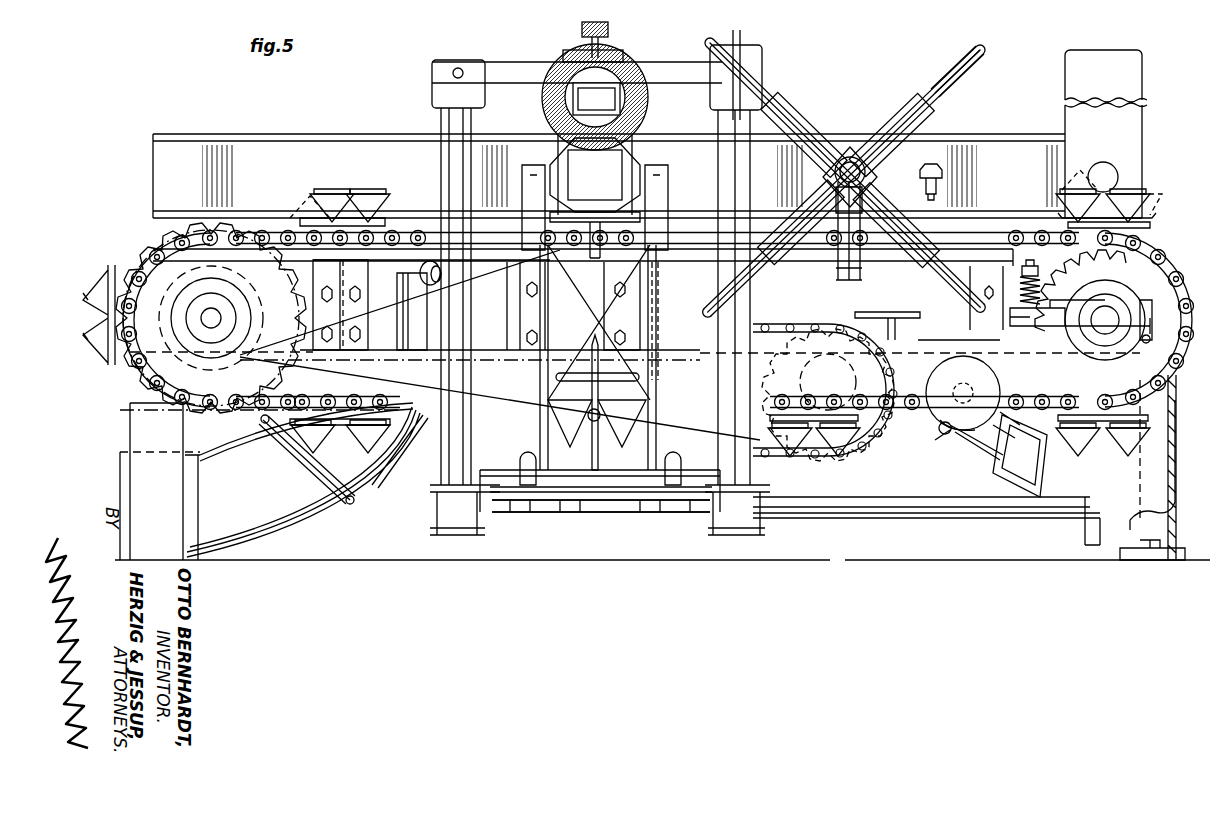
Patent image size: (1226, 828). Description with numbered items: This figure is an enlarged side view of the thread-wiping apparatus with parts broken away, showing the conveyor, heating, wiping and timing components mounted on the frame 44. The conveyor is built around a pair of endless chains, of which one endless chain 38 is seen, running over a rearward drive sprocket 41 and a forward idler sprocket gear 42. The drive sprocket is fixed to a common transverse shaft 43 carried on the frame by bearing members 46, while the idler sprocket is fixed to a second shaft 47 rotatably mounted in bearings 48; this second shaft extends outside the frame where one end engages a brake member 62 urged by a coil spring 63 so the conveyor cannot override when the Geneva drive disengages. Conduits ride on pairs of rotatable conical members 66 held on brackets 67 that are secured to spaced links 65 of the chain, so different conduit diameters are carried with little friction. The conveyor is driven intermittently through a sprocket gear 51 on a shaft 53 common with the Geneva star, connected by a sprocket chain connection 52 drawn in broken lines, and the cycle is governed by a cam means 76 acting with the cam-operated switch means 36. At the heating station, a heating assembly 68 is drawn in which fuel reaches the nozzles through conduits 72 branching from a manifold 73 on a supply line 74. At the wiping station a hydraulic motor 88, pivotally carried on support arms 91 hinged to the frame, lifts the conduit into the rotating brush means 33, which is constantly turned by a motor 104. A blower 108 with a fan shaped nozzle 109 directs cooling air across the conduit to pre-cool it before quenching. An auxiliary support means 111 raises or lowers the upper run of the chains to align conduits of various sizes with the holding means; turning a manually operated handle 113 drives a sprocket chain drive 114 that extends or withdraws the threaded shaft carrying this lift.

The rotating brush means 33 is at (625, 41).
The motor 104 is at (605, 98).
The hydraulic motor 88 is at (602, 190).
The scissor linkage 68 is at (859, 95).
The conduits 72 is at (973, 58).
The manifold 73 is at (826, 191).
The supply line 74 is at (860, 275).
The conical members 66 is at (325, 195).
The links 65 is at (360, 212).
The brackets 67 is at (1150, 220).
The endless chain 38 is at (134, 365).
The rearward drive sprocket 41 is at (178, 252).
The shaft 43 is at (210, 312).
The bearing members 46 is at (192, 295).
The forward idler sprocket gear 42 is at (1168, 275).
The shaft 47 is at (1106, 305).
The coil spring 63 is at (1042, 294).
The bearings 48 is at (1062, 330).
The brake member 62 is at (1174, 368).
The frame 44 is at (1188, 501).
The shaft 53 is at (812, 377).
The sprocket chain connection 52 is at (860, 460).
The sprocket gear 51 is at (772, 460).
The cam means 76 is at (971, 438).
The cam-operated switch means 36 is at (995, 481).
The auxiliary support means 111 is at (908, 342).
The fan shaped nozzle 109 is at (508, 293).
The support arms 91 is at (540, 360).
The manually operated handle 113 is at (558, 376).
The sprocket chain drive 114 is at (610, 510).
The blower 108 is at (292, 535).